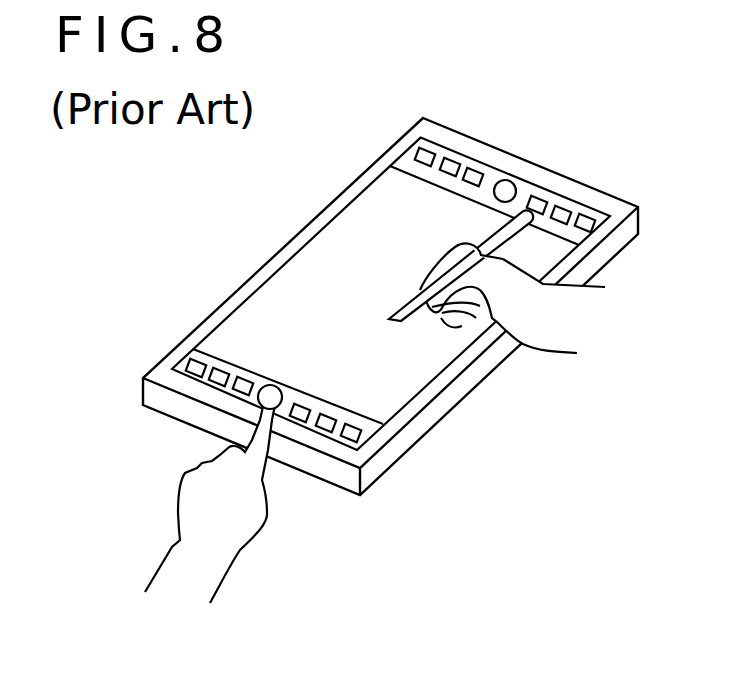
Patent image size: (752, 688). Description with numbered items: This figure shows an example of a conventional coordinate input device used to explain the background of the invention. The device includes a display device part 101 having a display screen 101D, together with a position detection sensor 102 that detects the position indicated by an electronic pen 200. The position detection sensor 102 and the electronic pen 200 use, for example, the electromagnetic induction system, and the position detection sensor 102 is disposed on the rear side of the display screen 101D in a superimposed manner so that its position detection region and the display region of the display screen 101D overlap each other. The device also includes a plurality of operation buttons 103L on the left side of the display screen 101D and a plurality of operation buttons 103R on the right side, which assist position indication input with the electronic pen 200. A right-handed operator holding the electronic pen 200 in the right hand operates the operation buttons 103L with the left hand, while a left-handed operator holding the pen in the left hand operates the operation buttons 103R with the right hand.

The display device part 101 is at (208, 334).
The display screen 101D is at (240, 322).
The position detection sensor 102 is at (325, 269).
The operation buttons 103L is at (243, 386).
The operation buttons 103R is at (585, 223).
The electronic pen 200 is at (410, 298).